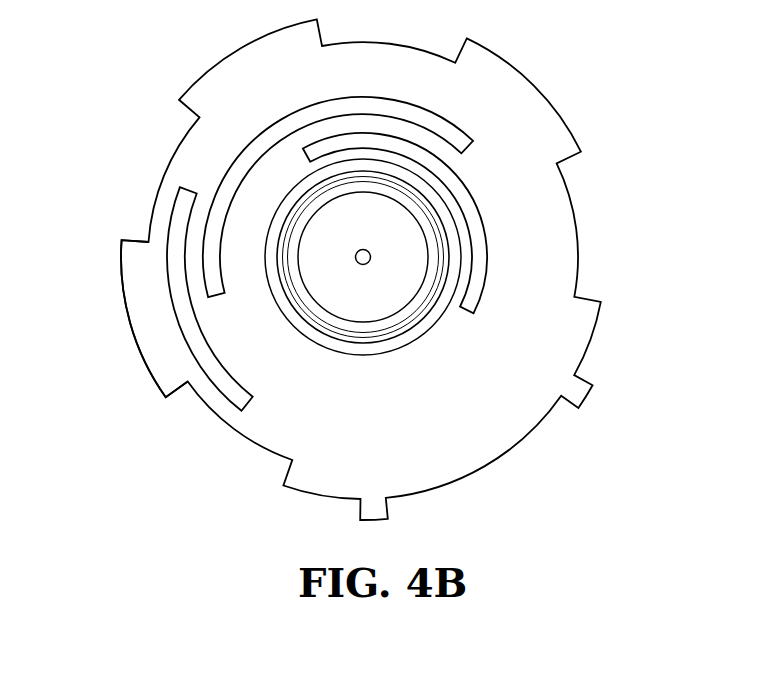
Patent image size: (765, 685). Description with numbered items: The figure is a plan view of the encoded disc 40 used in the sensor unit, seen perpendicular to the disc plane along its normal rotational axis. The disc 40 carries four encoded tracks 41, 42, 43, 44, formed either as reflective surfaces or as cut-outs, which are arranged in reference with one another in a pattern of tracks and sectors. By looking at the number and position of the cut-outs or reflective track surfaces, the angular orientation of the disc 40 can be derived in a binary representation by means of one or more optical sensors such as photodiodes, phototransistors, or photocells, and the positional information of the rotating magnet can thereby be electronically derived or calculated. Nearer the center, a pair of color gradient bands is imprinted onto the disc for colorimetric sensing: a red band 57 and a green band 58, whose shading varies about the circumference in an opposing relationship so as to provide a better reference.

The encoded disc 40 is at (125, 303).
The encoded track 41 is at (140, 220).
The encoded track 42 is at (192, 182).
The encoded track 43 is at (275, 133).
The encoded track 44 is at (340, 143).
The red color gradient band 57 is at (298, 334).
The green color gradient band 58 is at (375, 338).